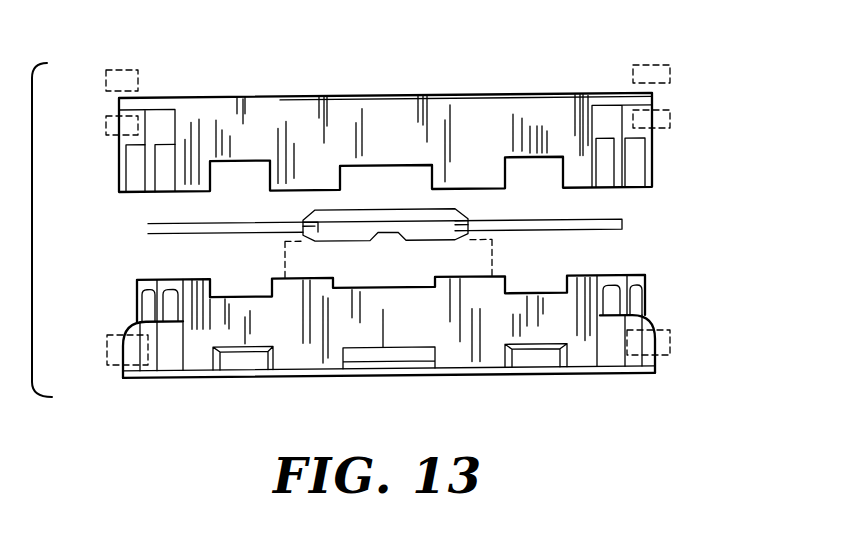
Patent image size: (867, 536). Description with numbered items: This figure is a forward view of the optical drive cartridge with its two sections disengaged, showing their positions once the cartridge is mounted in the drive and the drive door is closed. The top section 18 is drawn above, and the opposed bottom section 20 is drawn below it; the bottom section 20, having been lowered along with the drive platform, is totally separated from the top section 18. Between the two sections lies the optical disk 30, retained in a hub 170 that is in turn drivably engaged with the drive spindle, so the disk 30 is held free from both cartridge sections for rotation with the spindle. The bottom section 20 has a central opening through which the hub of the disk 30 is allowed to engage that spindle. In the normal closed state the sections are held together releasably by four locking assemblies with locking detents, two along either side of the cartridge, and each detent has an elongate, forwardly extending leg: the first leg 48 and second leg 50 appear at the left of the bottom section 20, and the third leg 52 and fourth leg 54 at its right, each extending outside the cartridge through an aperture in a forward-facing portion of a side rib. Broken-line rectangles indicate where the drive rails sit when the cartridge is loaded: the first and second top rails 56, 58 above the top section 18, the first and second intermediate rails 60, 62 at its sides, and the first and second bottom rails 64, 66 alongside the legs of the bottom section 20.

The top section 18 is at (537, 100).
The bottom section 20 is at (475, 371).
The optical disk 30 is at (565, 225).
The hub 170 is at (458, 215).
The first leg 48 is at (133, 330).
The second leg 50 is at (153, 366).
The third leg 52 is at (627, 363).
The fourth leg 54 is at (648, 320).
The first top rail 56 is at (127, 70).
The second top rail 58 is at (672, 73).
The first intermediate rail 60 is at (106, 128).
The second intermediate rail 62 is at (672, 120).
The first bottom rail 64 is at (107, 341).
The second bottom rail 66 is at (672, 342).